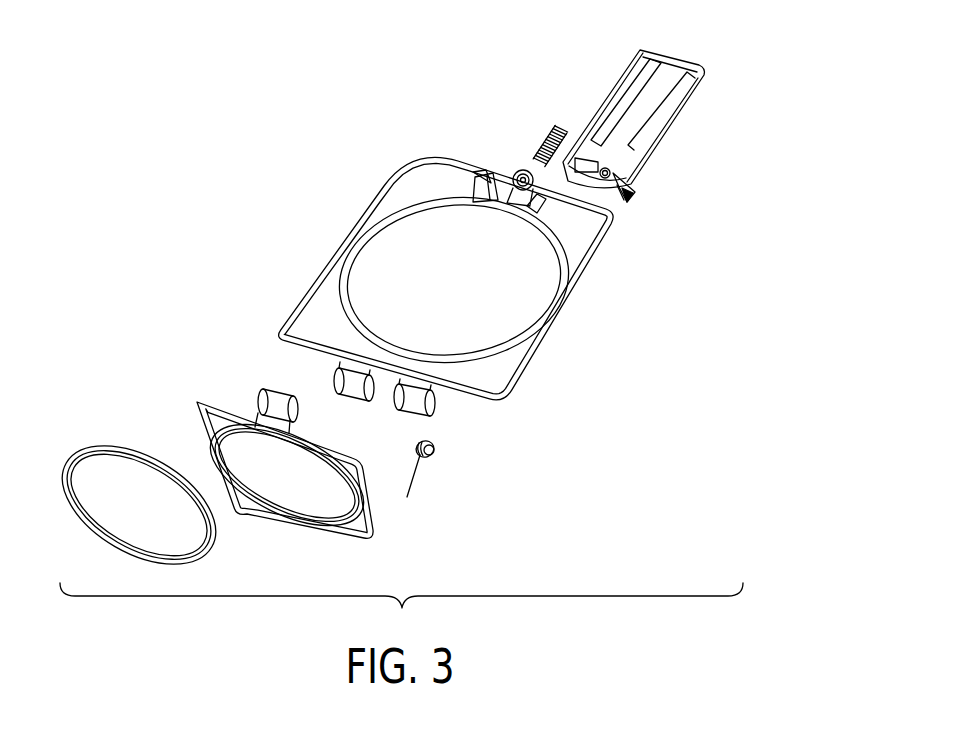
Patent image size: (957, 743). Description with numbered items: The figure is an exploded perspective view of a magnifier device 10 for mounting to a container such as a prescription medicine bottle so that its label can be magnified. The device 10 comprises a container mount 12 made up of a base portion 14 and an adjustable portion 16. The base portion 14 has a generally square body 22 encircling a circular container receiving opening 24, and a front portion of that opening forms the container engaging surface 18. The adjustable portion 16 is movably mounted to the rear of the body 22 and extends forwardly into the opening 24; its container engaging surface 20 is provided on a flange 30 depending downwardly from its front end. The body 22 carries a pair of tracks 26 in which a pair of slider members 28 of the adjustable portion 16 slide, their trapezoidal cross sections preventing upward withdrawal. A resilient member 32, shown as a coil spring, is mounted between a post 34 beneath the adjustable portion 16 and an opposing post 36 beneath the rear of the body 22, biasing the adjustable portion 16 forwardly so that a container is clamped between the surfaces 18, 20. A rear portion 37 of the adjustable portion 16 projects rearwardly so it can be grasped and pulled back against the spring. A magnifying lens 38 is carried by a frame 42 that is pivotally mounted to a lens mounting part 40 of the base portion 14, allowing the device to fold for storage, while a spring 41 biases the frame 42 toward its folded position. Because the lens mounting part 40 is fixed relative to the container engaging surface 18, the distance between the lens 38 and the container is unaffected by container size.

The magnifier device 10 is at (292, 187).
The container mount 12 is at (684, 242).
The base portion 14 is at (503, 383).
The adjustable portion 16 is at (683, 112).
The container engaging surface 18 is at (397, 348).
The container engaging surface 20 is at (622, 190).
The body 22 is at (327, 283).
The container receiving opening 24 is at (530, 297).
The tracks 26 is at (488, 178).
The slider members 28 is at (640, 73).
The flange 30 is at (617, 184).
The resilient member 32 is at (558, 127).
The post 34 is at (603, 171).
The post 36 is at (510, 200).
The rear portion 37 is at (682, 53).
The magnifying lens 38 is at (138, 520).
The lens mounting part 40 is at (410, 408).
The spring 41 is at (435, 453).
The frame 42 is at (380, 507).